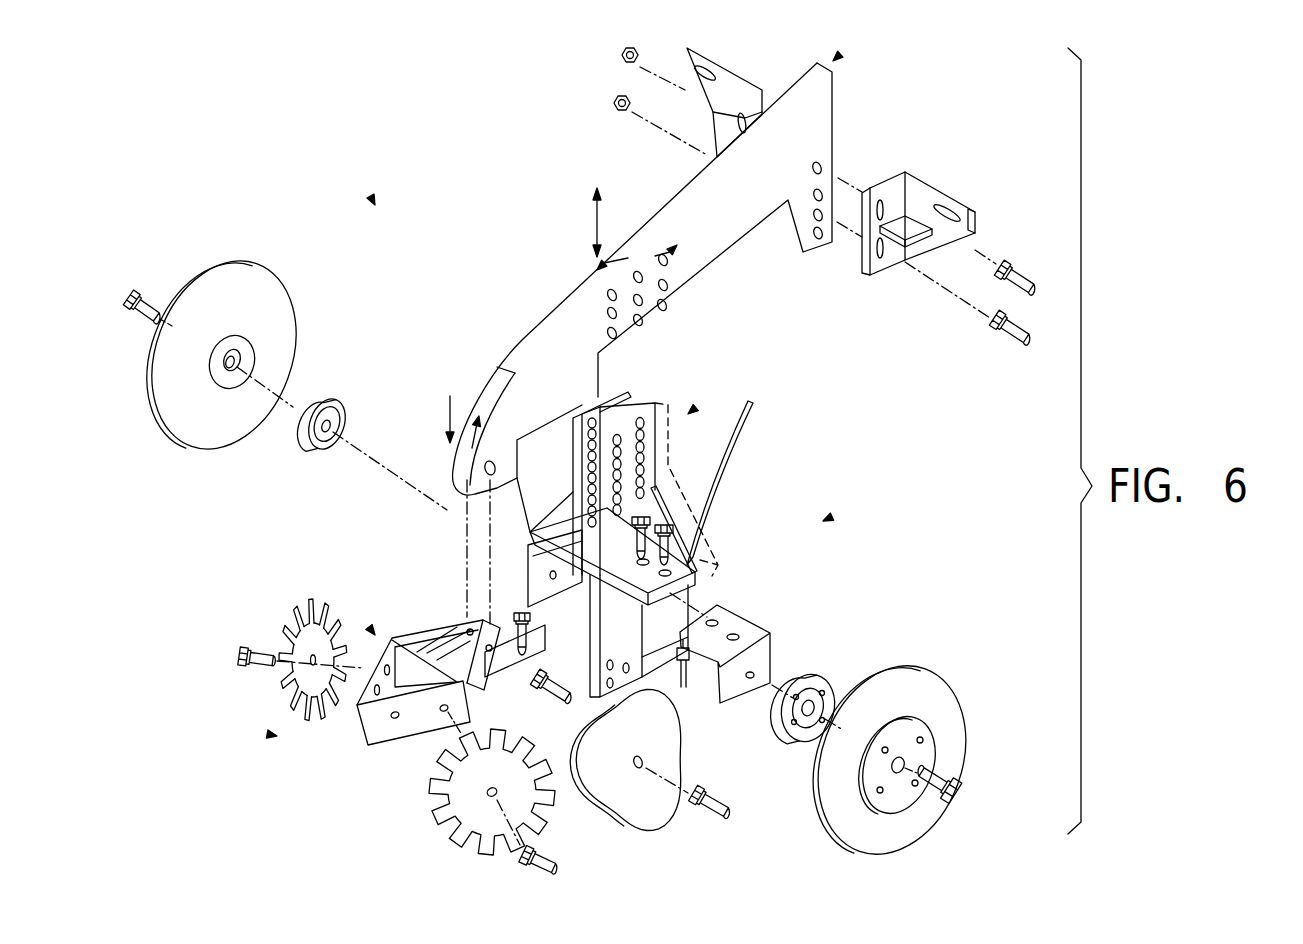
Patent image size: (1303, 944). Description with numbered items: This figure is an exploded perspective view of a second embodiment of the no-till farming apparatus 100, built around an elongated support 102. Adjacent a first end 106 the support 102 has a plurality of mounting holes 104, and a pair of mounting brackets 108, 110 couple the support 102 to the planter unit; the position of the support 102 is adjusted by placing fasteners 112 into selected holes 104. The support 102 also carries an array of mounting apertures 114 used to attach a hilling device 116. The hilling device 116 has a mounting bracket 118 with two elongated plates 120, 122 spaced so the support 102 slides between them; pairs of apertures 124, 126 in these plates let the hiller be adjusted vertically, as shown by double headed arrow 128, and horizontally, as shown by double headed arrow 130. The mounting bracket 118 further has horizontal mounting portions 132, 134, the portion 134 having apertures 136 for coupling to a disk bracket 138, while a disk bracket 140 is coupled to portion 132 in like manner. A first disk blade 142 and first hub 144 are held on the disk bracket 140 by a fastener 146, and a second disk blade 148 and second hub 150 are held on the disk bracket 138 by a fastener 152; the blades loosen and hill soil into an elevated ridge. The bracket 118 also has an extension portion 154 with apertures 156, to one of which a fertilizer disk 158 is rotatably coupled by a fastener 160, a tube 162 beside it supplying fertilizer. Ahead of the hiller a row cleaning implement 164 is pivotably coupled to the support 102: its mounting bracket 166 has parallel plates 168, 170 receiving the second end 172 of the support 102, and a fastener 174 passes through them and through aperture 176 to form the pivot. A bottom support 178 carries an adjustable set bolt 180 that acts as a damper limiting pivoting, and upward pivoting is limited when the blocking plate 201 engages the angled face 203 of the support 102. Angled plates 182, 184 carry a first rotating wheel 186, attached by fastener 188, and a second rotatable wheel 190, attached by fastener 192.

The no-till farming apparatus 100 is at (371, 200).
The elongated support 102 is at (712, 208).
The mounting holes 104 is at (822, 192).
The first end 106 is at (839, 55).
The mounting bracket 108 is at (722, 88).
The mounting bracket 110 is at (905, 195).
The fasteners 112 is at (1010, 264).
The mounting apertures 114 is at (614, 335).
The hilling device 116 is at (829, 518).
The mounting bracket 118 is at (694, 409).
The elongated plate 120 is at (560, 337).
The elongated plate 122 is at (650, 402).
The apertures 124 is at (592, 418).
The apertures 126 is at (607, 446).
The double headed arrow 128 is at (592, 218).
The double headed arrow 130 is at (666, 264).
The horizontal mounting portion 132 is at (540, 556).
The horizontal mounting portion 134 is at (690, 578).
The apertures 136 is at (697, 549).
The disk bracket 138 is at (757, 652).
The disk bracket 140 is at (528, 572).
The first disk blade 142 is at (268, 282).
The first hub 144 is at (333, 397).
The fastener 146 is at (146, 296).
The second disk blade 148 is at (935, 697).
The second hub 150 is at (821, 690).
The fastener 152 is at (960, 783).
The extension portion 154 is at (691, 634).
The apertures 156 is at (652, 608).
The fertilizer disk 158 is at (640, 790).
The fastener 160 is at (716, 800).
The tube 162 is at (748, 418).
The row cleaning implement 164 is at (270, 734).
The mounting bracket 166 is at (369, 627).
The parallel plate 168 is at (468, 640).
The parallel plate 170 is at (488, 662).
The second end 172 is at (456, 406).
The fastener 174 is at (556, 700).
The aperture 176 is at (467, 474).
The bottom support 178 is at (527, 650).
The set bolt 180 is at (532, 624).
The angled plate 182 is at (377, 673).
The angled plate 184 is at (415, 715).
The first rotating wheel 186 is at (298, 620).
The fastener 188 is at (243, 650).
The second rotatable wheel 190 is at (470, 812).
The fastener 192 is at (556, 862).
The blocking plate 201 is at (437, 644).
The angled face 203 is at (455, 470).